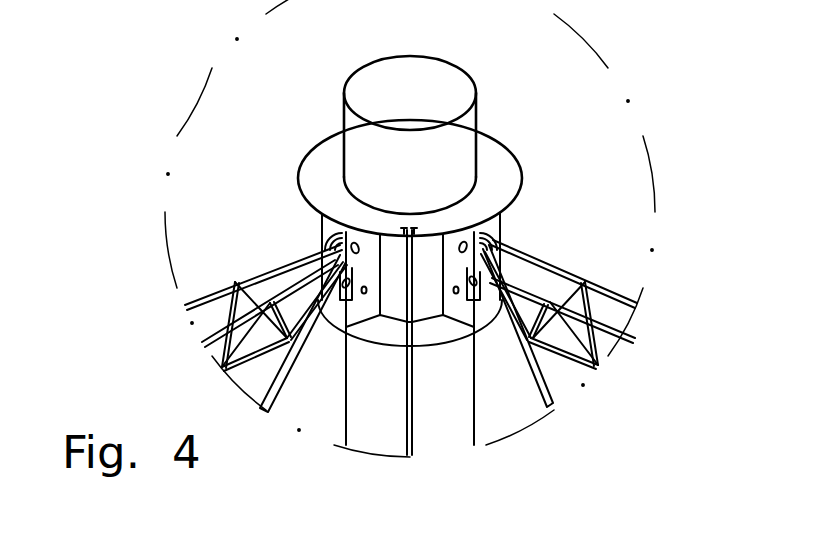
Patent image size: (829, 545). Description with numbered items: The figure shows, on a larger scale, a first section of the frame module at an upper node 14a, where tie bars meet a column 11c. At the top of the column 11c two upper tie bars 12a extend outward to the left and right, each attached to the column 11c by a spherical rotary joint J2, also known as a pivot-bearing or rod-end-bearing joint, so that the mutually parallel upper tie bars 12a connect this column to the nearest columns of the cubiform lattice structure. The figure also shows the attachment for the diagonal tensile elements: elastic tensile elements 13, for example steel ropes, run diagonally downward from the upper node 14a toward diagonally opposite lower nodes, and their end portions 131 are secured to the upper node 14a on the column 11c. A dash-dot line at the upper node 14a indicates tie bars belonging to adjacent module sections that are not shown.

The column 11c is at (463, 408).
The upper tie bar 12a is at (227, 282).
The elastic tensile element 13 is at (285, 388).
The end portion 131 is at (348, 290).
The upper node 14a is at (583, 163).
The spherical rotary joint J2 is at (335, 245).